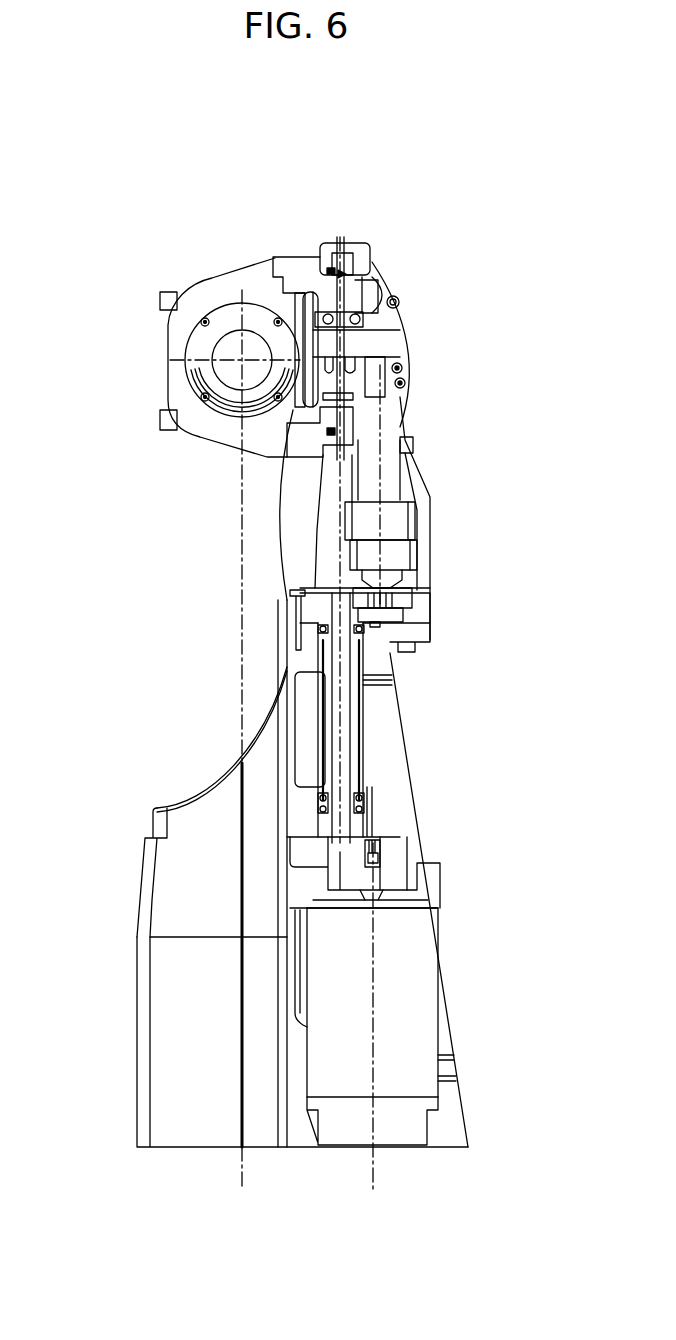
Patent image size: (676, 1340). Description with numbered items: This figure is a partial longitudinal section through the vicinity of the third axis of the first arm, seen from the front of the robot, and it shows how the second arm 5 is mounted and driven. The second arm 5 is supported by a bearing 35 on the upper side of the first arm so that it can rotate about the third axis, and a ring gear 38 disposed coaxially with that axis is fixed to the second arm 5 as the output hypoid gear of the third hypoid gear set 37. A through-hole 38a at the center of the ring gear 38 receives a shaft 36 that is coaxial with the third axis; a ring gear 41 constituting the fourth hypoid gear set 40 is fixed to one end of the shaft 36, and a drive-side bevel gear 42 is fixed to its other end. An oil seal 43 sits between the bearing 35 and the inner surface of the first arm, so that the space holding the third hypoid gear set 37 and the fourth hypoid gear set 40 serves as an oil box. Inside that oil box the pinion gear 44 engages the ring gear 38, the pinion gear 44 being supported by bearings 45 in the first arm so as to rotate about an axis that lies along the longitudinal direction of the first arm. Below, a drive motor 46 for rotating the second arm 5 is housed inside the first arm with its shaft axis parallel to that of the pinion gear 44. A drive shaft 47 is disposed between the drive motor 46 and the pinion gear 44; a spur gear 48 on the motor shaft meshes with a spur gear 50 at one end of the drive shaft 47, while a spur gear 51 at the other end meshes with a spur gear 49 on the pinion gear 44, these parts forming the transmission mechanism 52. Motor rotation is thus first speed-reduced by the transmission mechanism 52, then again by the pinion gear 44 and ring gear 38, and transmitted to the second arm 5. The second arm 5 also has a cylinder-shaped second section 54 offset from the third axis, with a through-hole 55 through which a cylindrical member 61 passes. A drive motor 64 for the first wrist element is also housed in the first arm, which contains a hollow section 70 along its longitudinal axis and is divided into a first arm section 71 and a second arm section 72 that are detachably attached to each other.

The second arm 5 is at (293, 238).
The bearing 35 is at (346, 243).
The shaft 36 is at (400, 340).
The third hypoid gear set 37 is at (420, 420).
The ring gear 38 is at (370, 260).
The through-hole 38a is at (378, 305).
The fourth hypoid gear set 40 is at (400, 386).
The ring gear 41 is at (400, 302).
The drive-side bevel gear 42 is at (298, 458).
The oil seal 43 is at (333, 262).
The pinion gear 44 is at (413, 445).
The bearings 45 is at (415, 525).
The drive motor 46 is at (440, 995).
The drive shaft 47 is at (355, 750).
The spur gear 48 is at (397, 843).
The spur gear 49 is at (410, 600).
The spur gear 50 is at (367, 830).
The spur gear 51 is at (293, 605).
The transmission mechanism 52 is at (403, 695).
The second section 54 is at (207, 278).
The through-hole 55 is at (236, 337).
The cylindrical member 61 is at (207, 345).
The drive motor 64 is at (295, 717).
The hollow section 70 is at (168, 1053).
The first arm section 71 is at (425, 480).
The second arm section 72 is at (463, 1100).